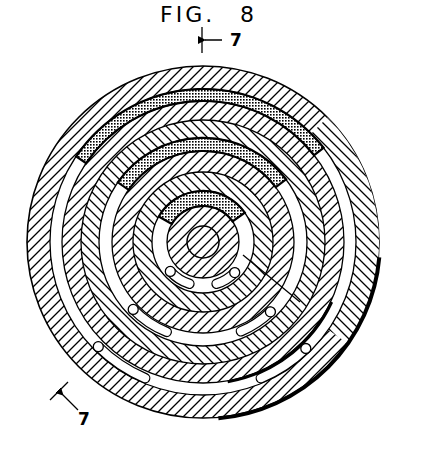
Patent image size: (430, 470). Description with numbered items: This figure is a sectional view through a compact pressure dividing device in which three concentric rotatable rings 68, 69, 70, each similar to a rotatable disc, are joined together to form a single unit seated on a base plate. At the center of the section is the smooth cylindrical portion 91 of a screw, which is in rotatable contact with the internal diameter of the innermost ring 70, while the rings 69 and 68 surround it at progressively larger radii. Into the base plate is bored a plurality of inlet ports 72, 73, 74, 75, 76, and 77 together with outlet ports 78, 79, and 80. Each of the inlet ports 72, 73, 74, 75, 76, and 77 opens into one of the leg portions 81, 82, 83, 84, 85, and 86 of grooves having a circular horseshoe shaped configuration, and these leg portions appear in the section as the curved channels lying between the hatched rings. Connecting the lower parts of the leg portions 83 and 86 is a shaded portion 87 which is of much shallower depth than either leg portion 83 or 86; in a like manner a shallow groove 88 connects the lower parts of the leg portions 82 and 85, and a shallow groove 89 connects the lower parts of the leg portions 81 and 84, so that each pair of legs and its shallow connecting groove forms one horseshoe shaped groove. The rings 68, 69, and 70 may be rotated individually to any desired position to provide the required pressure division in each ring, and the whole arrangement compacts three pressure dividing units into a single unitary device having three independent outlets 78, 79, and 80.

The rotatable ring 68 is at (232, 385).
The rotatable ring 69 is at (190, 385).
The rotatable ring 70 is at (160, 390).
The inlet port 72 is at (93, 348).
The inlet port 73 is at (128, 311).
The inlet port 74 is at (165, 273).
The inlet port 75 is at (263, 380).
The inlet port 76 is at (274, 316).
The inlet port 77 is at (310, 351).
The outlet port 78 is at (287, 112).
The outlet port 79 is at (235, 130).
The outlet port 80 is at (214, 121).
The leg portion 81 is at (62, 192).
The leg portion 82 is at (107, 230).
The leg portion 83 is at (163, 250).
The leg portion 84 is at (348, 207).
The leg portion 85 is at (298, 257).
The leg portion 86 is at (318, 272).
The shaded portion 87 is at (140, 147).
The shallow groove 88 is at (165, 150).
The shallow groove 89 is at (176, 95).
The smooth cylindrical portion 91 is at (211, 228).